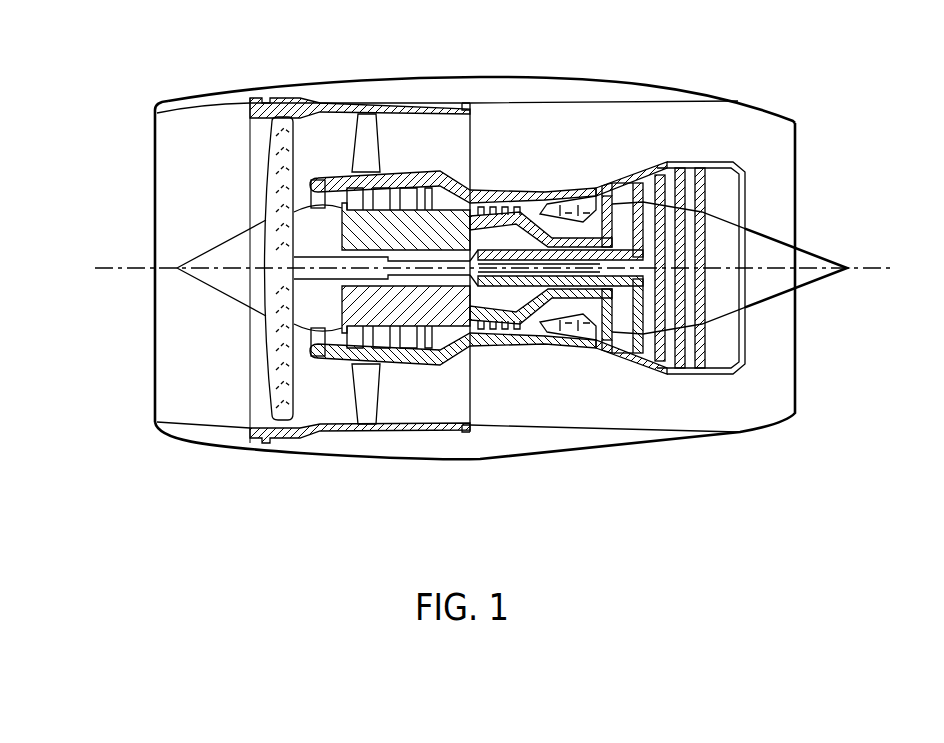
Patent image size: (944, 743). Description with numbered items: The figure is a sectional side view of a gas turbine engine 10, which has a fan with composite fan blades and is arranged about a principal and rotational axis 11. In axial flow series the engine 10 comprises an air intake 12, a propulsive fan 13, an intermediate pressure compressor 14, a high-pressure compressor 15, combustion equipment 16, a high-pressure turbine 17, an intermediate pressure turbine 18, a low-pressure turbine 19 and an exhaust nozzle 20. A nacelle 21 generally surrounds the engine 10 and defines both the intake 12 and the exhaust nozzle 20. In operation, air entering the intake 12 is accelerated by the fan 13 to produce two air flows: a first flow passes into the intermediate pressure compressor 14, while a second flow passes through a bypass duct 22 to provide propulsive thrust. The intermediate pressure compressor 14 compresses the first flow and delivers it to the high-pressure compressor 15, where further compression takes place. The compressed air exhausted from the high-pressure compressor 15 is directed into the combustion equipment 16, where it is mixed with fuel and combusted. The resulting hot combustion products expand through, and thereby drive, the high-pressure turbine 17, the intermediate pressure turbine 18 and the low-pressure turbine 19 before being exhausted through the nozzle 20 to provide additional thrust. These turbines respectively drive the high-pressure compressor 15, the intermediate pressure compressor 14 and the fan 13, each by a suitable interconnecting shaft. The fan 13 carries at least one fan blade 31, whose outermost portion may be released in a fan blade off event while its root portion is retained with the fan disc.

The gas turbine engine 10 is at (122, 146).
The principal and rotational axis 11 is at (163, 266).
The air intake 12 is at (213, 112).
The propulsive fan 13 is at (270, 378).
The intermediate pressure compressor 14 is at (378, 350).
The high-pressure compressor 15 is at (494, 206).
The combustion equipment 16 is at (568, 322).
The high-pressure turbine 17 is at (605, 328).
The intermediate pressure turbine 18 is at (633, 182).
The low-pressure turbine 19 is at (663, 356).
The exhaust nozzle 20 is at (797, 396).
The nacelle 21 is at (498, 90).
The bypass duct 22 is at (437, 159).
The fan blade 31 is at (291, 99).